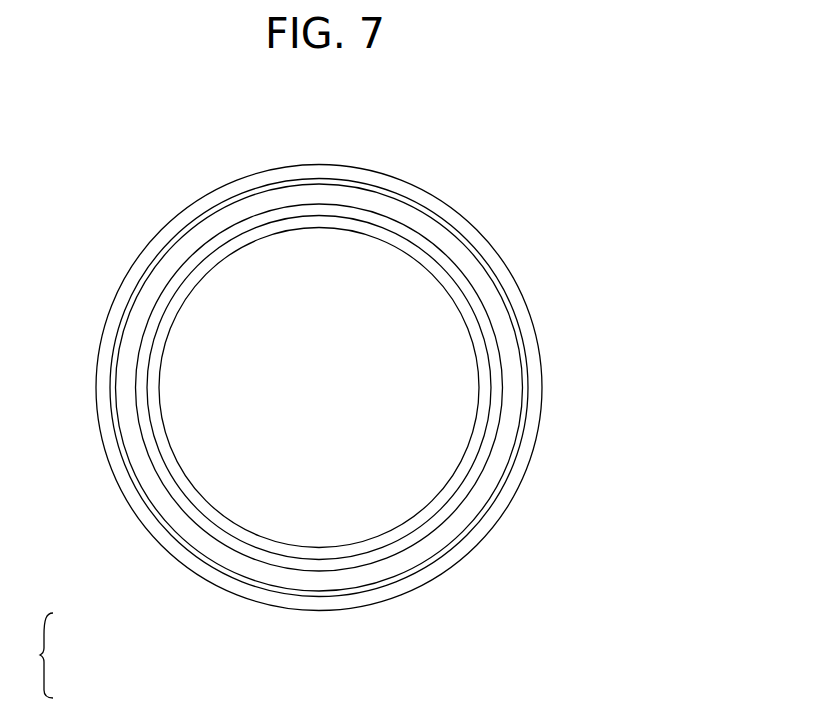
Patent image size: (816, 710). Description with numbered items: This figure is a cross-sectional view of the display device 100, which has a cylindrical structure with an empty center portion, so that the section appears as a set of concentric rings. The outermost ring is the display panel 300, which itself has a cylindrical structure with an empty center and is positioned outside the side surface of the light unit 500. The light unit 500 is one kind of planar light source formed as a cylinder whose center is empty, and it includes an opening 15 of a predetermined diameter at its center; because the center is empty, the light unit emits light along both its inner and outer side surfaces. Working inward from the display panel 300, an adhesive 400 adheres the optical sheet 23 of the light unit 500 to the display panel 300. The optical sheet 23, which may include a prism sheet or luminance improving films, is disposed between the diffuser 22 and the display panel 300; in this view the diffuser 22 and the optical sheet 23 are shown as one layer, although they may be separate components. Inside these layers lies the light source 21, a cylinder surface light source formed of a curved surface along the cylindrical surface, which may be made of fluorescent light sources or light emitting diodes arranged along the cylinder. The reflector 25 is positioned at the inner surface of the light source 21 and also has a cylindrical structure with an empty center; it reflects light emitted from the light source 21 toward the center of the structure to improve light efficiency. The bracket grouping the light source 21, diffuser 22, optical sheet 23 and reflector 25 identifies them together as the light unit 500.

The display device 100 is at (473, 214).
The display panel 300 is at (358, 177).
The adhesive 400 is at (275, 185).
The diffuser 22 is at (319, 357).
The optical sheet 23 is at (227, 215).
The light source 21 is at (172, 288).
The reflector 25 is at (160, 343).
The opening 15 is at (345, 311).
The light unit 500 is at (44, 656).